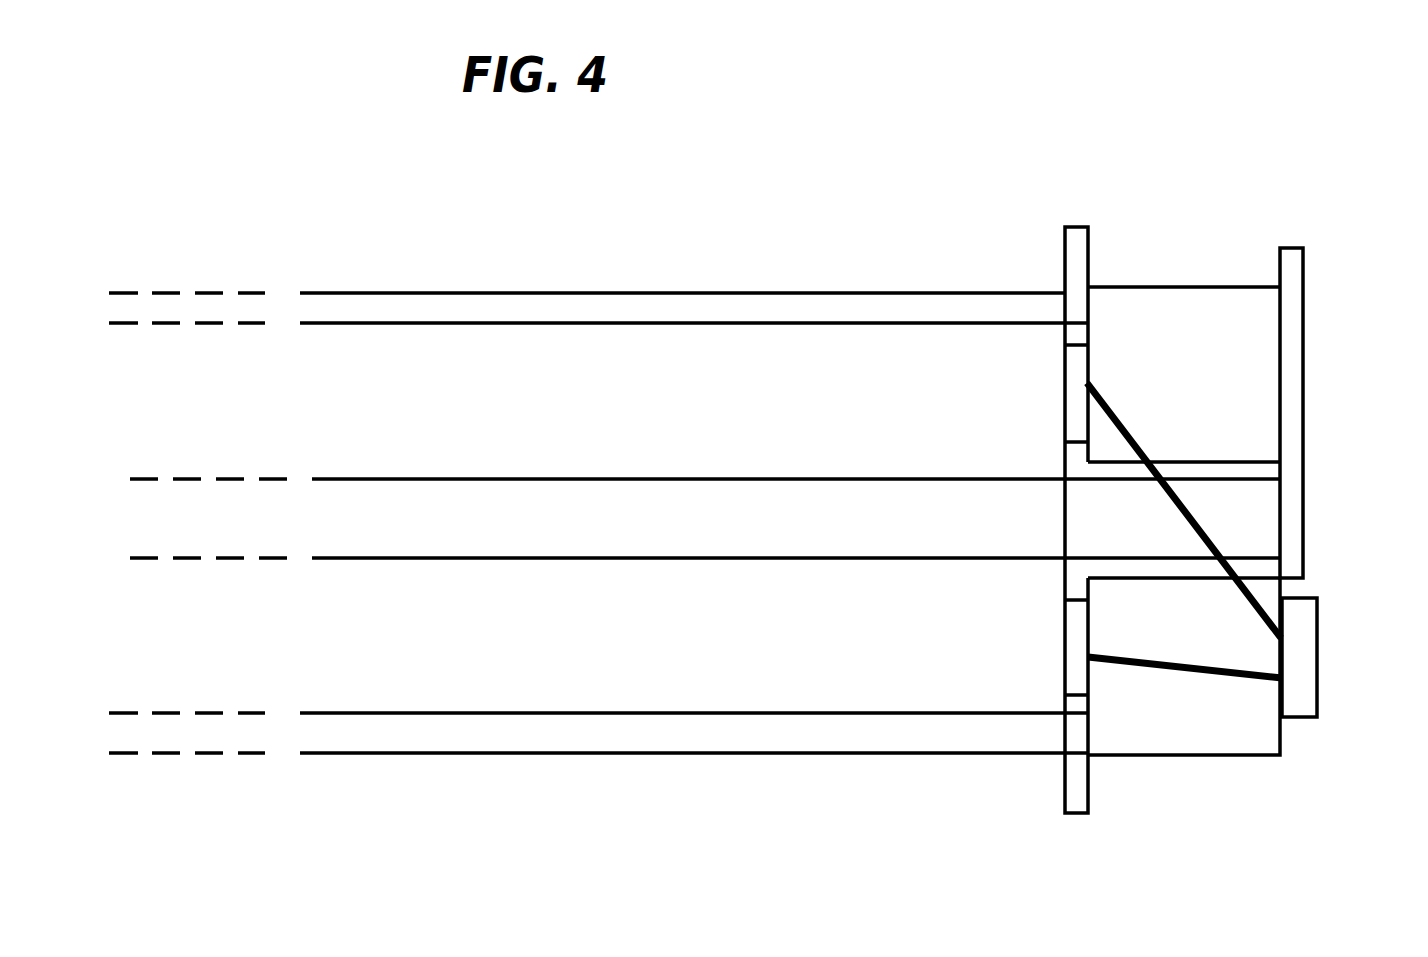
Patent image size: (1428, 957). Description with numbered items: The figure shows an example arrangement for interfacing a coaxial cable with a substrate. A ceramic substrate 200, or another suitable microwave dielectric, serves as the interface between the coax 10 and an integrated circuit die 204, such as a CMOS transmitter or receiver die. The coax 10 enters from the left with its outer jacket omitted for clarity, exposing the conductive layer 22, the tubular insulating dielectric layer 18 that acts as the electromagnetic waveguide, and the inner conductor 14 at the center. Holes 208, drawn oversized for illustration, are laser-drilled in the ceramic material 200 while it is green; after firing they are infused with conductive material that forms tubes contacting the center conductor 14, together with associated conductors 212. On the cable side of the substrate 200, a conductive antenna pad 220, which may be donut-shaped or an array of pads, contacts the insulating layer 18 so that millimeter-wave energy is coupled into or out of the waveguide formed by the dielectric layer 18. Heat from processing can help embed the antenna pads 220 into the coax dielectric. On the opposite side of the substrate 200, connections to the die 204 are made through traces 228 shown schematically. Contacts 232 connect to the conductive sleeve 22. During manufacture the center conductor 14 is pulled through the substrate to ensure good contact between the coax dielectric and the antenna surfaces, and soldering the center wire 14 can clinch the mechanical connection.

The coaxial cable 10 is at (482, 824).
The inner conductor 14 is at (478, 516).
The dielectric layer 18 is at (668, 366).
The conductive layer 22 is at (371, 307).
The ceramic substrate 200 is at (1183, 327).
The integrated circuit die 204 is at (1320, 642).
The holes 208 is at (1270, 470).
The conductors 212 is at (1290, 270).
The antenna pad 220 is at (1073, 410).
The traces 228 is at (1113, 418).
The contacts 232 is at (1090, 228).